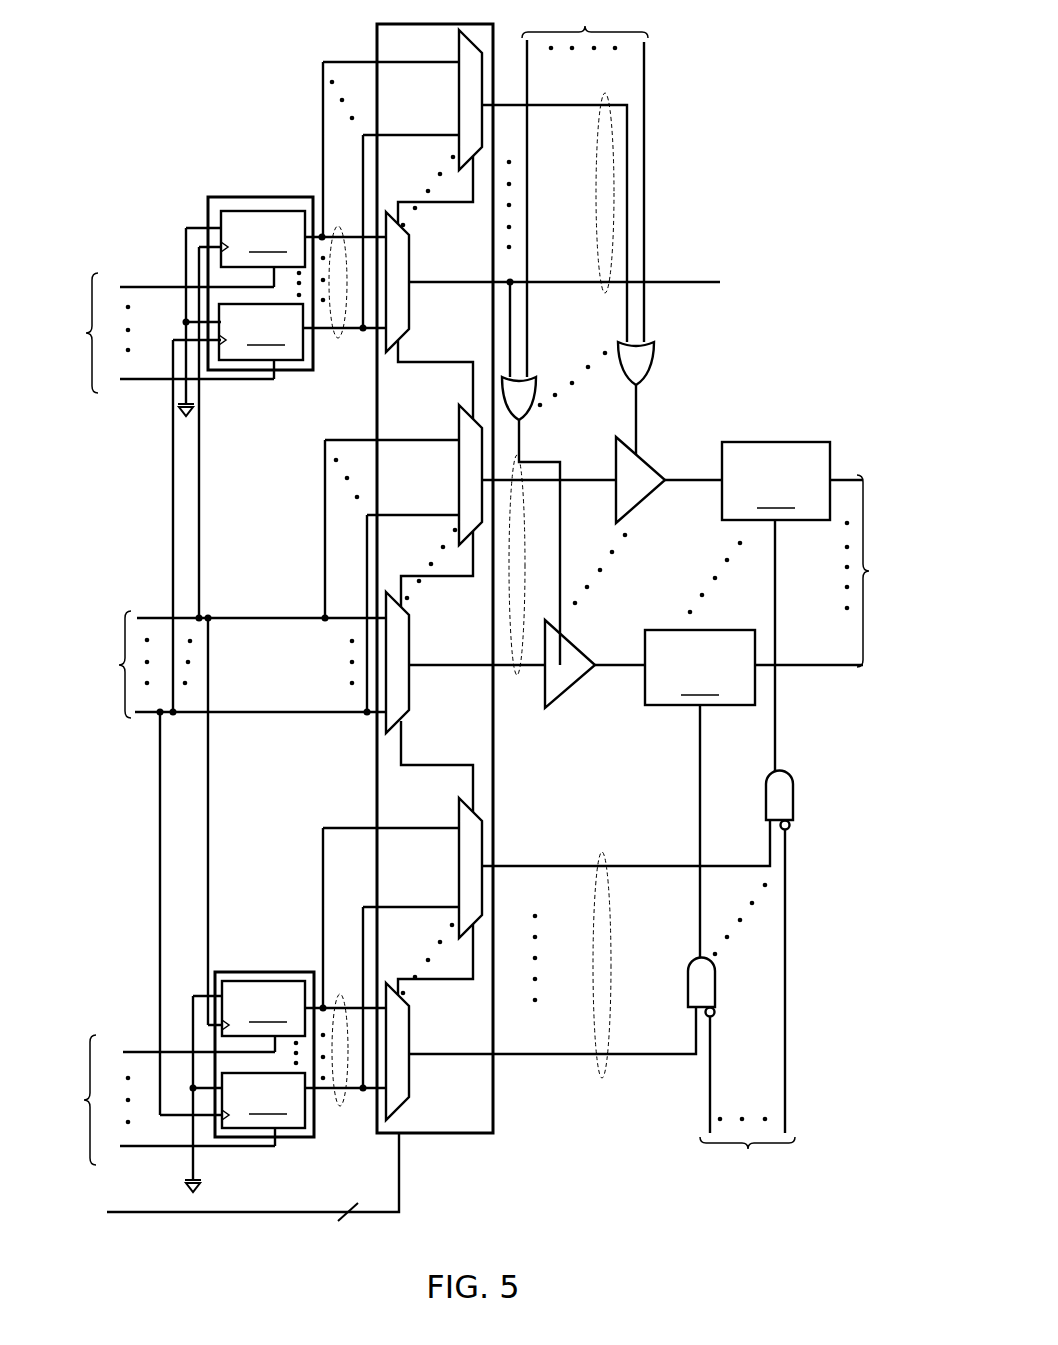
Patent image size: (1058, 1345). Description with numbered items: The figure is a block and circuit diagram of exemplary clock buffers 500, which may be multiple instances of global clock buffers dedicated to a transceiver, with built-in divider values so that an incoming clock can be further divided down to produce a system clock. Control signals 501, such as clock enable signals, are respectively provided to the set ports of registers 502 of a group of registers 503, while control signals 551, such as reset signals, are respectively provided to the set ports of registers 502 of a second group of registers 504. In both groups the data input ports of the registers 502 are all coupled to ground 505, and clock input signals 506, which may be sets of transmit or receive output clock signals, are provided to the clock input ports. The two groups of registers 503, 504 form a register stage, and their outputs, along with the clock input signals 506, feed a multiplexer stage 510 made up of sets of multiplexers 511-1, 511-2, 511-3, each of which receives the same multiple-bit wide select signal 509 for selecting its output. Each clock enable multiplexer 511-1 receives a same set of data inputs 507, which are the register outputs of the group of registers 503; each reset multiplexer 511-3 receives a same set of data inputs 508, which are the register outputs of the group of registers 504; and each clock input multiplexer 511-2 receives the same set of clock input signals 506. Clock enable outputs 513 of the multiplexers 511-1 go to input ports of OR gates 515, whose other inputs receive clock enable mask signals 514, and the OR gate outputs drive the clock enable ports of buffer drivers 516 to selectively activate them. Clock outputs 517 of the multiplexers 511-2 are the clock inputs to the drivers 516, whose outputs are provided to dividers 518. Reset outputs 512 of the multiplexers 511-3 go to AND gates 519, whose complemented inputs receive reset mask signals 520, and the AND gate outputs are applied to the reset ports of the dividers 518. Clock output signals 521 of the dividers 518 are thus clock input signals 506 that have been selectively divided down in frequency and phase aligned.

The clock buffers 500 is at (133, 37).
The control signals 501 is at (158, 333).
The registers 502 is at (262, 670).
The group of registers 503 is at (208, 213).
The group of registers 504 is at (222, 972).
The ground 505 is at (184, 1184).
The clock input signals 506 is at (231, 664).
The data inputs 507 is at (335, 340).
The data inputs 508 is at (341, 1108).
The select signal 509 is at (310, 1210).
The multiplexer stage 510 is at (410, 1135).
The multiplexers 511-1 is at (409, 322).
The multiplexers 511-2 is at (409, 706).
The multiplexers 511-3 is at (409, 1099).
The reset outputs 512 is at (604, 1080).
The clock enable outputs 513 is at (597, 206).
The clock enable mask signals 514 is at (585, 189).
The OR gates 515 is at (657, 367).
The buffer drivers 516 is at (570, 700).
The clock outputs 517 is at (523, 700).
The dividers 518 is at (737, 573).
The AND gates 519 is at (692, 960).
The reset mask signals 520 is at (747, 1151).
The clock output signals 521 is at (883, 571).
The control signals 551 is at (158, 1100).